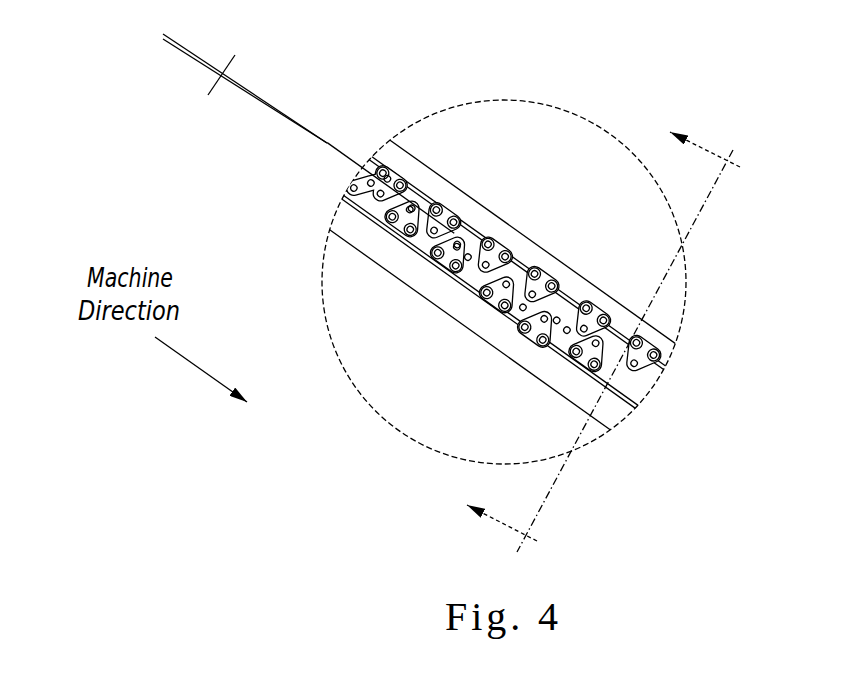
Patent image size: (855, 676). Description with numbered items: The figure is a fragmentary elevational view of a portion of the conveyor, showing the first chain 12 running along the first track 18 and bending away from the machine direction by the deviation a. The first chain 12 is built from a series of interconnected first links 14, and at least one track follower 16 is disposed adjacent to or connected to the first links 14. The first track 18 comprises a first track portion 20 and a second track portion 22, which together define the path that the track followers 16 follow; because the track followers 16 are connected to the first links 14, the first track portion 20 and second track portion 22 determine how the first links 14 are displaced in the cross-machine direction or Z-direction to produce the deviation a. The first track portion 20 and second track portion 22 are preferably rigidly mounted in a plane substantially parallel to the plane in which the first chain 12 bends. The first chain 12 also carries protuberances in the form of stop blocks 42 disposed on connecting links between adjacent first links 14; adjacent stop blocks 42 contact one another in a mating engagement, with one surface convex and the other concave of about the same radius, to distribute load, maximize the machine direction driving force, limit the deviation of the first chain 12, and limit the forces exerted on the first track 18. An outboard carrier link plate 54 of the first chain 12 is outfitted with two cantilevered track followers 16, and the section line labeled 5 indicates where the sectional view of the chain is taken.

The first chain 12 is at (487, 313).
The first links 14 is at (547, 283).
The track follower 16 is at (618, 330).
The first track 18 is at (384, 271).
The first track portion 20 is at (472, 235).
The second track portion 22 is at (470, 280).
The stop blocks 42 is at (392, 215).
The outboard carrier link plate 54 is at (543, 277).
The deviation a is at (277, 183).
The section line 5- 5 is at (598, 331).